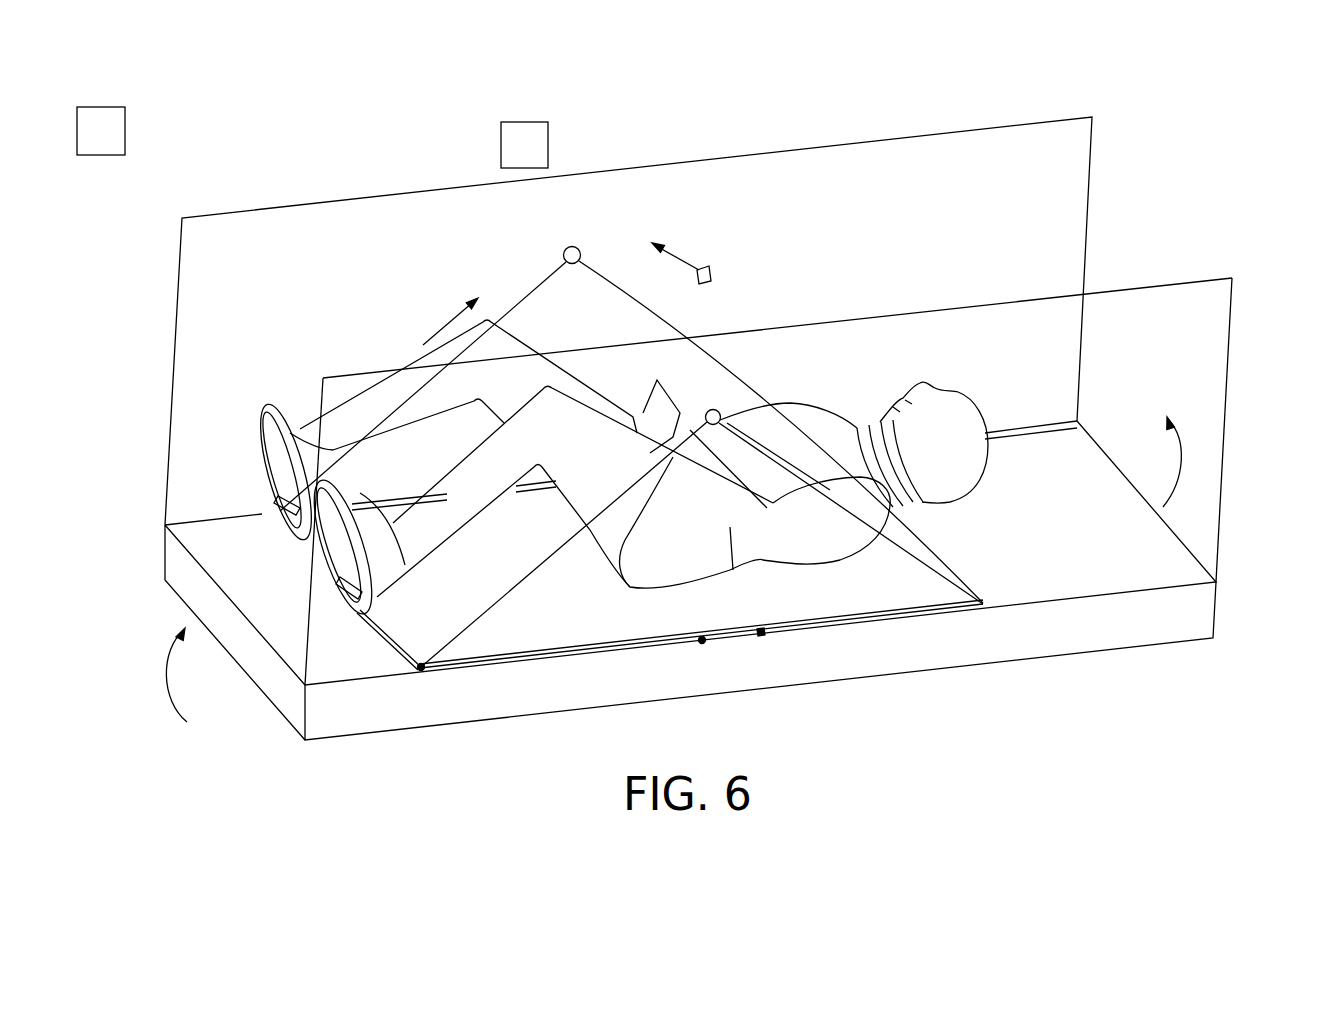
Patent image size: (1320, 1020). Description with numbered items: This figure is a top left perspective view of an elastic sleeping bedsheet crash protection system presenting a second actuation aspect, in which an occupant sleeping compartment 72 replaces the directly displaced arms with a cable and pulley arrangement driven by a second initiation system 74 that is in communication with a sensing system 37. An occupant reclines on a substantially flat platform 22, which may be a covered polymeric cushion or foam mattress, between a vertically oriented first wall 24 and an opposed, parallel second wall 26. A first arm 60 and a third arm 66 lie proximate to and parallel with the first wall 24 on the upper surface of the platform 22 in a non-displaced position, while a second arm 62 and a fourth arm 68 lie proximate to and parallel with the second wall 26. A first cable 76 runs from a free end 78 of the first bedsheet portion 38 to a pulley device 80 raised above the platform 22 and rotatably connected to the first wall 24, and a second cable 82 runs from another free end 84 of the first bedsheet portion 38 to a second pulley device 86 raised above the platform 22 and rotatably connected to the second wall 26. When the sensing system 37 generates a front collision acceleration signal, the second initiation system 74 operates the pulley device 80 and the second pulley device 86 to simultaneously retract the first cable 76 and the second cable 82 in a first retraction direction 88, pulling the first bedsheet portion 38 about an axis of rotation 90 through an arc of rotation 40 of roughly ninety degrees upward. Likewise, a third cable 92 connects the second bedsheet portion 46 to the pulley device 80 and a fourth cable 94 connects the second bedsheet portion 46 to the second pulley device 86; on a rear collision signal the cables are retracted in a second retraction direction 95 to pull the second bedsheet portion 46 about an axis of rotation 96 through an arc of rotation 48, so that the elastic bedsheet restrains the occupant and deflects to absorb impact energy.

The platform 22 is at (1075, 625).
The first wall 24 is at (1048, 132).
The second wall 26 is at (1207, 305).
The sensing system 37 is at (88, 143).
The first bedsheet portion 38 is at (425, 633).
The arc of rotation 40 is at (168, 683).
The second bedsheet portion 46 is at (1140, 563).
The arc of rotation 48 is at (1178, 455).
The first arm 60 is at (326, 378).
The second arm 62 is at (470, 667).
The third arm 66 is at (1035, 428).
The fourth arm 68 is at (870, 623).
The occupant sleeping compartment 72 is at (1166, 128).
The second initiation system 74 is at (511, 157).
The first cable 76 is at (535, 289).
The free end 78 is at (279, 506).
The pulley device 80 is at (578, 246).
The second cable 82 is at (547, 565).
The free end 84 is at (415, 684).
The second pulley device 86 is at (718, 409).
The first retraction direction 88 is at (445, 322).
The axis of rotation 90 is at (703, 645).
The third cable 92 is at (680, 335).
The fourth cable 94 is at (960, 586).
The second retraction direction 95 is at (702, 267).
The axis of rotation 96 is at (761, 636).